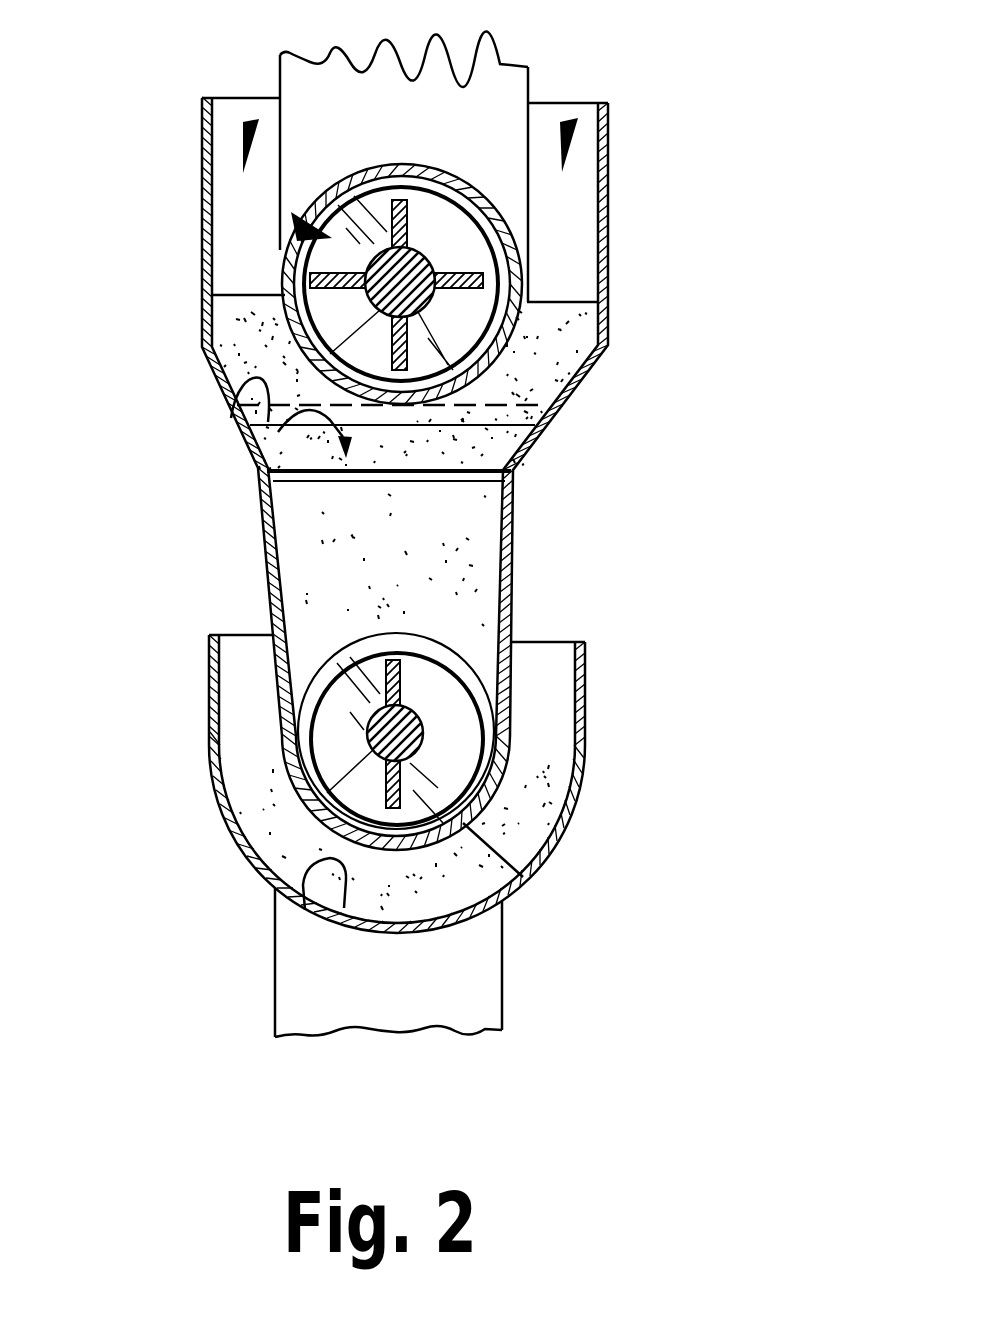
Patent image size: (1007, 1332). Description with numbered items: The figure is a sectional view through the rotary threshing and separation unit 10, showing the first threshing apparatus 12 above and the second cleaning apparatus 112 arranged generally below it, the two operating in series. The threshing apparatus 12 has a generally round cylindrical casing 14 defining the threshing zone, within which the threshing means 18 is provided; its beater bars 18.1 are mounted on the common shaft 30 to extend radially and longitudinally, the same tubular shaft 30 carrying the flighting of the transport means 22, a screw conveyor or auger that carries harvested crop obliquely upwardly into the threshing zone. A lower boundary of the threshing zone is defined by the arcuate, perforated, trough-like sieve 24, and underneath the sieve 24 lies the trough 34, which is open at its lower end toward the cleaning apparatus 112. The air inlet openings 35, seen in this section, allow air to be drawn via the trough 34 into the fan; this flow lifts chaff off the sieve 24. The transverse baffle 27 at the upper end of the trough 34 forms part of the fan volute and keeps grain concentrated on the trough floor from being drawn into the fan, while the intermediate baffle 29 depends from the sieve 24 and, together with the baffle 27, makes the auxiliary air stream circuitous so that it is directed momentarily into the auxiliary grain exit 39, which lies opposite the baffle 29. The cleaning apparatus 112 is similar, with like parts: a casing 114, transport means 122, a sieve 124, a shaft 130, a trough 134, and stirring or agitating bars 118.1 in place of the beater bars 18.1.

The rotary threshing and separation unit 10 is at (785, 68).
The threshing apparatus 12 is at (687, 226).
The cylindrical casing 14 is at (410, 165).
The threshing means 18 is at (458, 160).
The beater bars 18.1 is at (402, 228).
The transport means 22 is at (293, 225).
The sieve 24 is at (519, 341).
The transverse baffle 27 is at (527, 447).
The intermediate baffle 29 is at (240, 323).
The common shaft 30 is at (417, 272).
The trough 34 is at (227, 402).
The air inlet openings 35 is at (249, 122).
The auxiliary grain exit 39 is at (253, 467).
The cleaning apparatus 112 is at (650, 757).
The cylindrical casing of cleaning apparatus 114 is at (458, 660).
The stirring bars 118.1 is at (396, 688).
The transport means of cleaning apparatus 122 is at (277, 650).
The sieve of cleaning apparatus 124 is at (523, 877).
The shaft of cleaning apparatus 130 is at (380, 731).
The trough of cleaning apparatus 134 is at (277, 893).